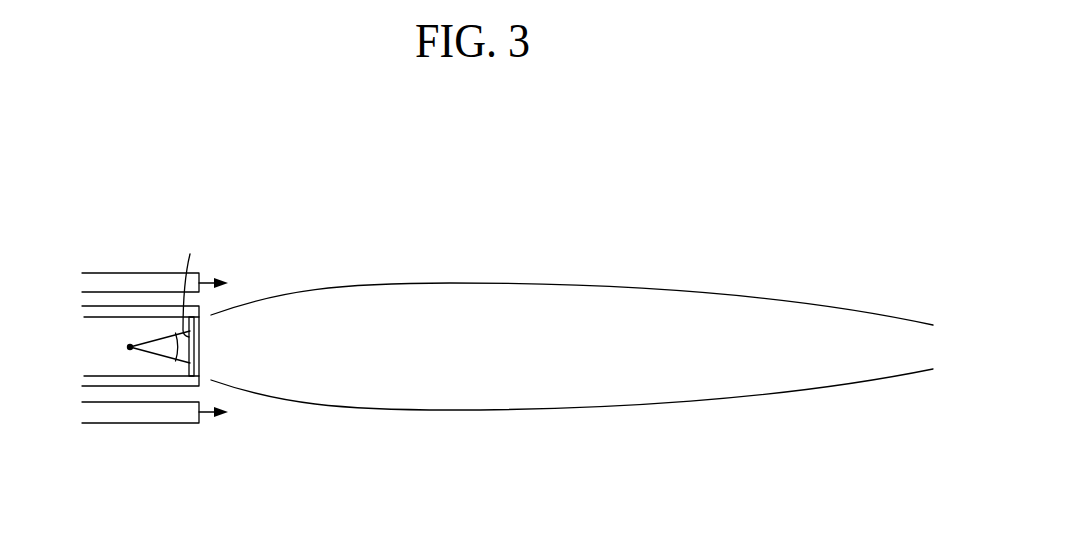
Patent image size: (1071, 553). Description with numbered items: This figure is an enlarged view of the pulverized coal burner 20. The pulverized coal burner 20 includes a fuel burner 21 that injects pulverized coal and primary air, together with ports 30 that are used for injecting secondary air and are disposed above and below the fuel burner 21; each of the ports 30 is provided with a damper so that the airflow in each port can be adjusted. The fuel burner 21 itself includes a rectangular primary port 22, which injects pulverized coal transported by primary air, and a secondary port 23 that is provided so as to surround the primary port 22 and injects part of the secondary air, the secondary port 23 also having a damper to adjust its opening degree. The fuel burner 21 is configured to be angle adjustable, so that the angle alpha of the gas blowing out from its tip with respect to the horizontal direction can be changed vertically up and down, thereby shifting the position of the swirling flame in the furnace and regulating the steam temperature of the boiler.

The pulverized coal burner 20 is at (218, 160).
The fuel burner 21 is at (222, 331).
The primary port 22 is at (98, 347).
The secondary port 23 is at (164, 326).
The ports 30 is at (142, 271).